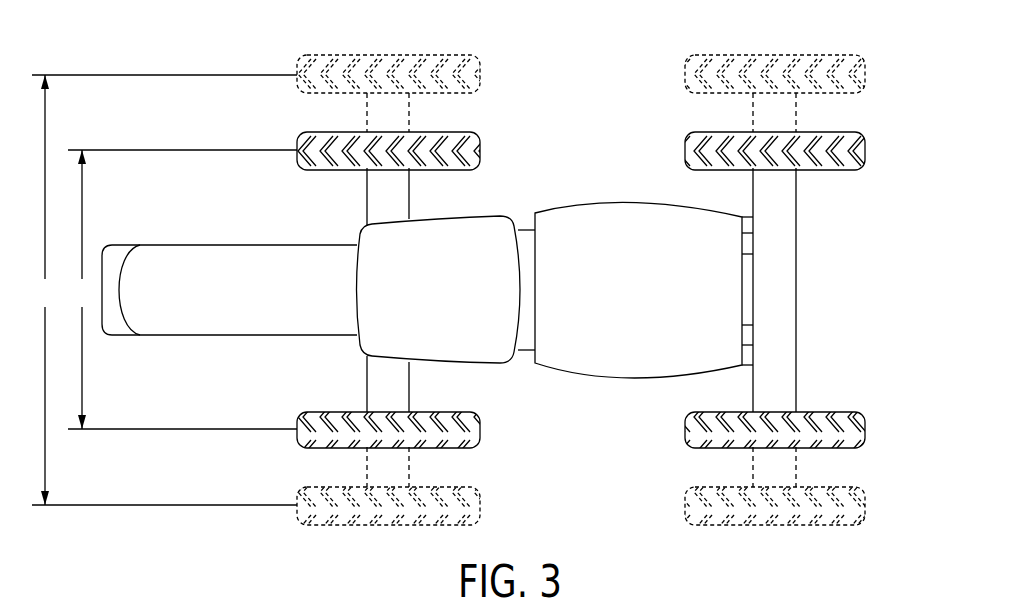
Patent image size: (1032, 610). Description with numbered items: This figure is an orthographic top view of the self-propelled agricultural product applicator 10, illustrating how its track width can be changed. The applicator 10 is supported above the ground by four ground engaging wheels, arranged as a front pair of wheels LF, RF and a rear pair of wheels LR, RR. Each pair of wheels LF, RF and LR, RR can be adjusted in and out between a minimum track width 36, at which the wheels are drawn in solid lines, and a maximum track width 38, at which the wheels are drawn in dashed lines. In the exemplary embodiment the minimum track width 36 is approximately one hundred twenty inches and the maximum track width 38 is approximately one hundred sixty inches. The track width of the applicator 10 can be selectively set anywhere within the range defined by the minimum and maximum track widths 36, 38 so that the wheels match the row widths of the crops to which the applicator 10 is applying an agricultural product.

The self-propelled agricultural product applicator 10 is at (220, 52).
The right front wheel RF is at (478, 137).
The left front wheel LF is at (478, 416).
The right rear wheel RR is at (863, 136).
The left rear wheel LR is at (863, 415).
The maximum track width 38 is at (163, 290).
The minimum track width 36 is at (182, 289).